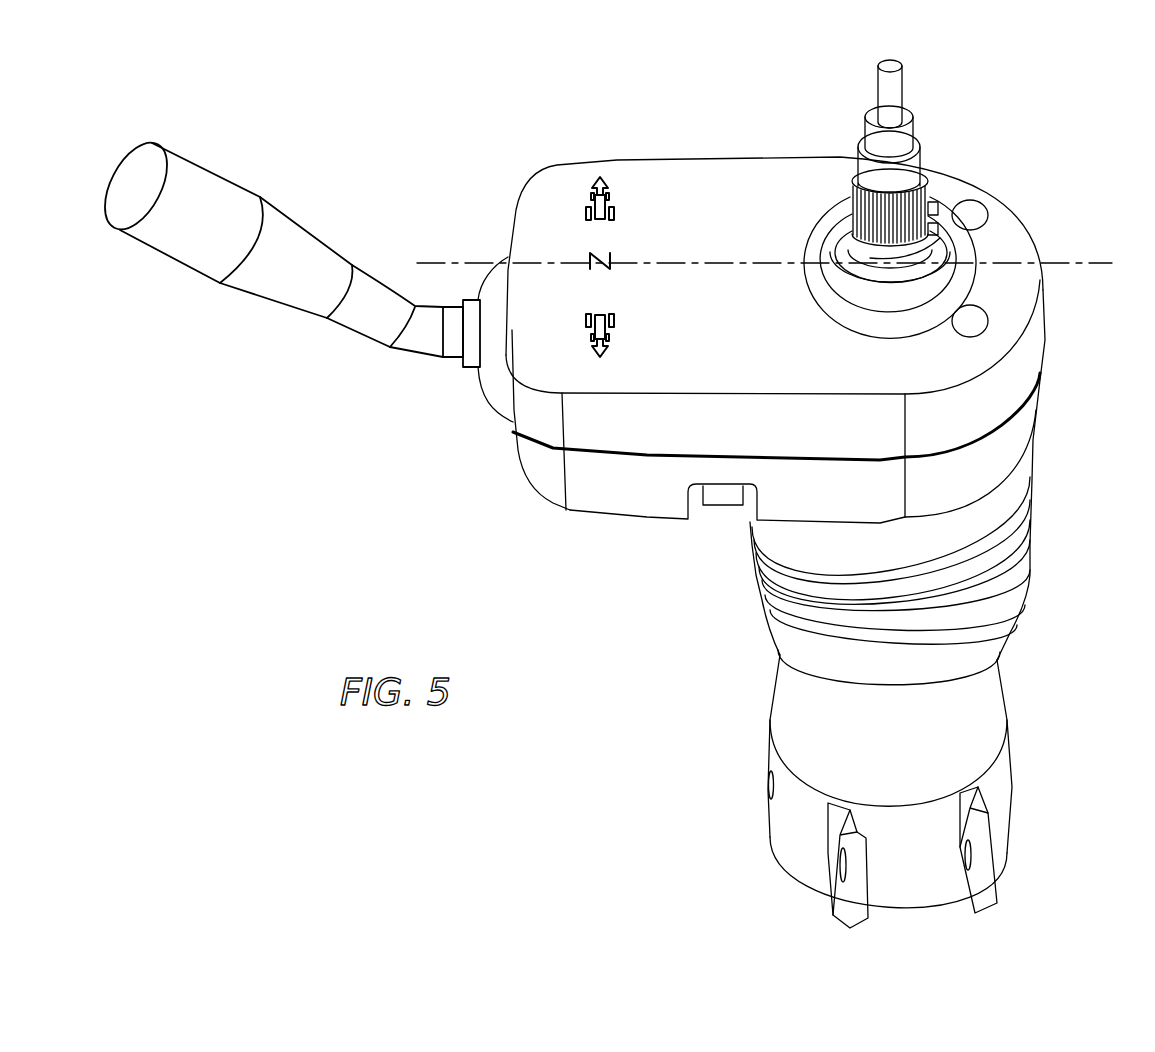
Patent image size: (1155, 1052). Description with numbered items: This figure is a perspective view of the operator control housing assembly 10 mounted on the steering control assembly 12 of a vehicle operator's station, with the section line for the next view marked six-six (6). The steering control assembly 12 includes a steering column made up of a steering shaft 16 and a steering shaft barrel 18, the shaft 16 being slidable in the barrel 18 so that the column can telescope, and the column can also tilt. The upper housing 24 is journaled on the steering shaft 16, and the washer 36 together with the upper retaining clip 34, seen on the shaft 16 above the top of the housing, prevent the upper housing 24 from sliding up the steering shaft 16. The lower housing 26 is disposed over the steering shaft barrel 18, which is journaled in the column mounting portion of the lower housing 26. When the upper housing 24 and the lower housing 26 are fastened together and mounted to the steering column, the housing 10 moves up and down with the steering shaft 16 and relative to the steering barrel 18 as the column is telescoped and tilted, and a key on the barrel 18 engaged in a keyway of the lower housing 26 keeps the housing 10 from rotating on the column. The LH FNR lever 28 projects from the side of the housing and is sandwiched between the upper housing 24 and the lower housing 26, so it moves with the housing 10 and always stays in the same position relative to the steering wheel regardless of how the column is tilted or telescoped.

The section line 6- 6 is at (417, 263).
The operator control housing assembly 10 is at (528, 562).
The steering control assembly 12 is at (706, 798).
The steering shaft 16 is at (908, 130).
The steering shaft barrel 18 is at (997, 687).
The upper housing 24 is at (680, 185).
The lower housing 26 is at (650, 500).
The LH FNR lever 28 is at (425, 347).
The upper retaining clip 34 is at (847, 227).
The washer 36 is at (947, 220).